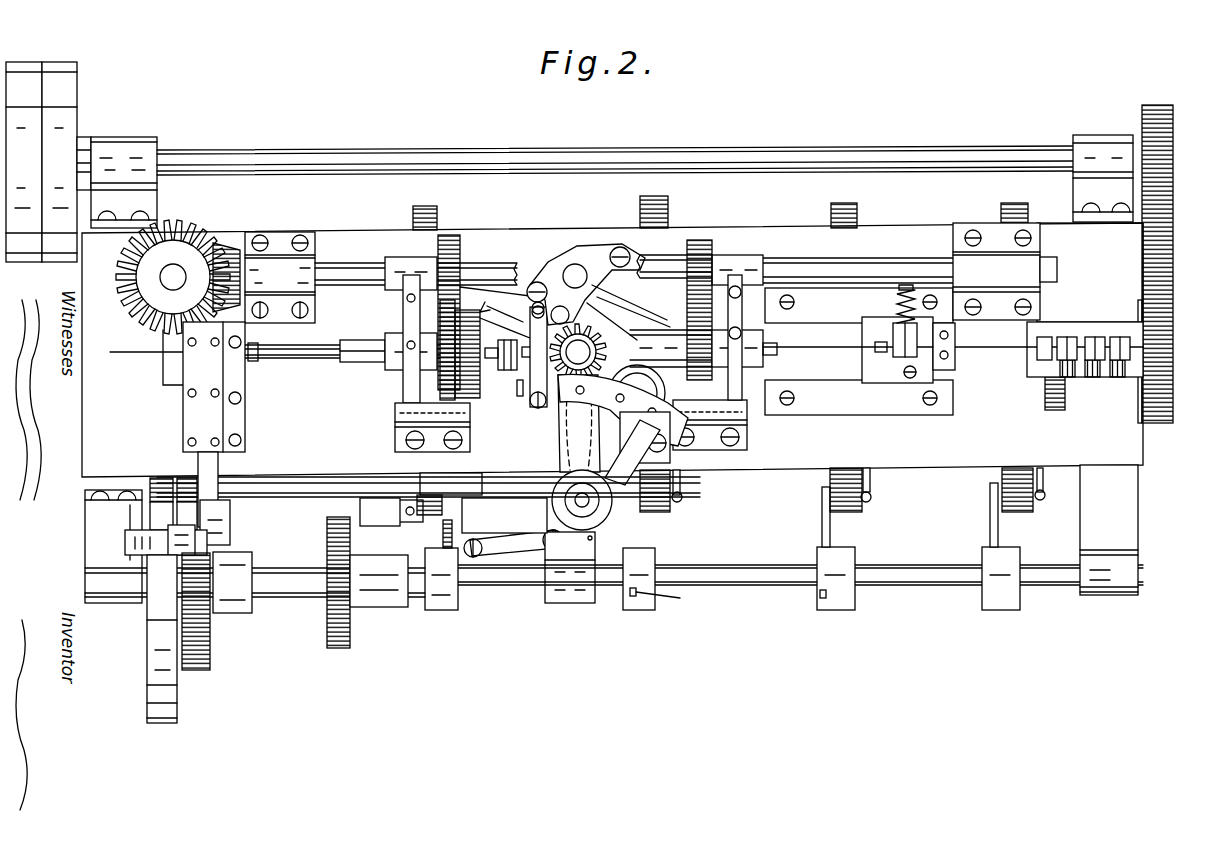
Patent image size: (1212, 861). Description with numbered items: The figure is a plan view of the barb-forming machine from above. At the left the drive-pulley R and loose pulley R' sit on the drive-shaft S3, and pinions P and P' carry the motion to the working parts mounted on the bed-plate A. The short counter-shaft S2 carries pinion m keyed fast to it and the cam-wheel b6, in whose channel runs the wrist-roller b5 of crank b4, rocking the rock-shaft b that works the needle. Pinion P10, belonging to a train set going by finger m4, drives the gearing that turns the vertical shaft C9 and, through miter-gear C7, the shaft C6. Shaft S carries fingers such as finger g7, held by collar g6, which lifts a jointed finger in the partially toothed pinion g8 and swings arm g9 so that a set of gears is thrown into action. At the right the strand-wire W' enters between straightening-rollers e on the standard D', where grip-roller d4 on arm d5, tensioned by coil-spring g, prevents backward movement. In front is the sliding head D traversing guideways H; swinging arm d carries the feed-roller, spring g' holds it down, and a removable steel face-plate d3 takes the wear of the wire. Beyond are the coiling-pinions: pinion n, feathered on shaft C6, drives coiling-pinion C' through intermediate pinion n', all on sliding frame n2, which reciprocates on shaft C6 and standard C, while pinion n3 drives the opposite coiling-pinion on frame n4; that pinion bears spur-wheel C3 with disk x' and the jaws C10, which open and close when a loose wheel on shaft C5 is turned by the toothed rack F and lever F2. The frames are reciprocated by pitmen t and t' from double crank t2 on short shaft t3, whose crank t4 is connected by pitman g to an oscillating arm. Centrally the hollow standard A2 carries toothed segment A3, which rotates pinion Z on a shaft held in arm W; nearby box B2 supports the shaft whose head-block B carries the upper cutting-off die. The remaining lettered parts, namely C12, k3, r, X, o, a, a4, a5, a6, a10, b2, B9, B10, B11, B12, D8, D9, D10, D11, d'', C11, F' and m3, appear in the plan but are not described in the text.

The drive-pulley R is at (24, 162).
The loose pulley R' is at (59, 162).
The pinion P is at (1167, 264).
The pinion P' is at (1167, 361).
The drive-shaft S3 is at (561, 150).
The bed-plate A is at (631, 313).
The shaft C5 is at (173, 277).
The miter-gear C7 is at (226, 245).
The bearing bracket C12 is at (280, 277).
The shaft C6 is at (350, 272).
The pinion n3 is at (460, 252).
The strand-wire W' is at (657, 343).
The collar k3 is at (360, 364).
The frame n4 is at (403, 310).
The standard C is at (570, 426).
The spur-wheel C3 is at (440, 370).
The disk x' is at (495, 304).
The jaws C10 is at (507, 375).
The vertical shaft C9 is at (515, 405).
The intermediate pinion n' is at (610, 349).
The pin r is at (517, 393).
The pitman t is at (591, 281).
The short shaft t3 is at (575, 276).
The pitman t' is at (535, 278).
The double crank t2 is at (547, 298).
The crank t4 is at (562, 309).
The pitman g is at (837, 347).
The pinion Z is at (578, 352).
The pinion n is at (700, 306).
The sliding frame n2 is at (775, 352).
The coiling-pinion C' is at (719, 341).
The arm W is at (566, 423).
The head-block B is at (637, 393).
The toothed segment A3 is at (623, 410).
The box B2 is at (637, 448).
The hollow standard A2 is at (606, 515).
The link a5 is at (479, 528).
The block X is at (570, 567).
The pin o is at (590, 538).
The shaft S is at (796, 575).
The bearing a4 is at (441, 579).
The rack a10 is at (440, 533).
The block a is at (504, 515).
The block b2 is at (449, 494).
The bearing a6 is at (380, 511).
The bearing B9 is at (639, 579).
The pin B10 is at (673, 599).
The rack B11 is at (672, 500).
The arm B12 is at (681, 484).
The bearing D8 is at (836, 578).
The rod D9 is at (831, 525).
The rack D11 is at (862, 508).
The arm D10 is at (872, 483).
The collar g6 is at (1001, 578).
The finger g7 is at (990, 518).
The pinion g8 is at (1025, 512).
The arm g9 is at (1045, 483).
The guideways H is at (859, 351).
The sliding head D is at (908, 350).
The swinging arm d is at (892, 336).
The face-plate d3 is at (902, 373).
The collar d'' is at (867, 348).
The spring g' is at (894, 304).
The bearing bracket C11 is at (1005, 271).
The standard D' is at (1085, 340).
The arm d5 is at (1065, 336).
The grip-roller d4 is at (1030, 348).
The straightening-rollers e is at (1106, 341).
The bracket F' is at (214, 387).
The sliding toothed rack F is at (194, 489).
The finger m4 is at (232, 513).
The counter-shaft S2 is at (298, 570).
The crank b4 is at (166, 551).
The lever F2 is at (181, 540).
The cam-wheel b6 is at (203, 690).
The wrist-roller b5 is at (162, 612).
The pinion P10 is at (210, 632).
The bearing m3 is at (232, 582).
The pinion m is at (327, 533).
The rock-shaft b is at (300, 485).